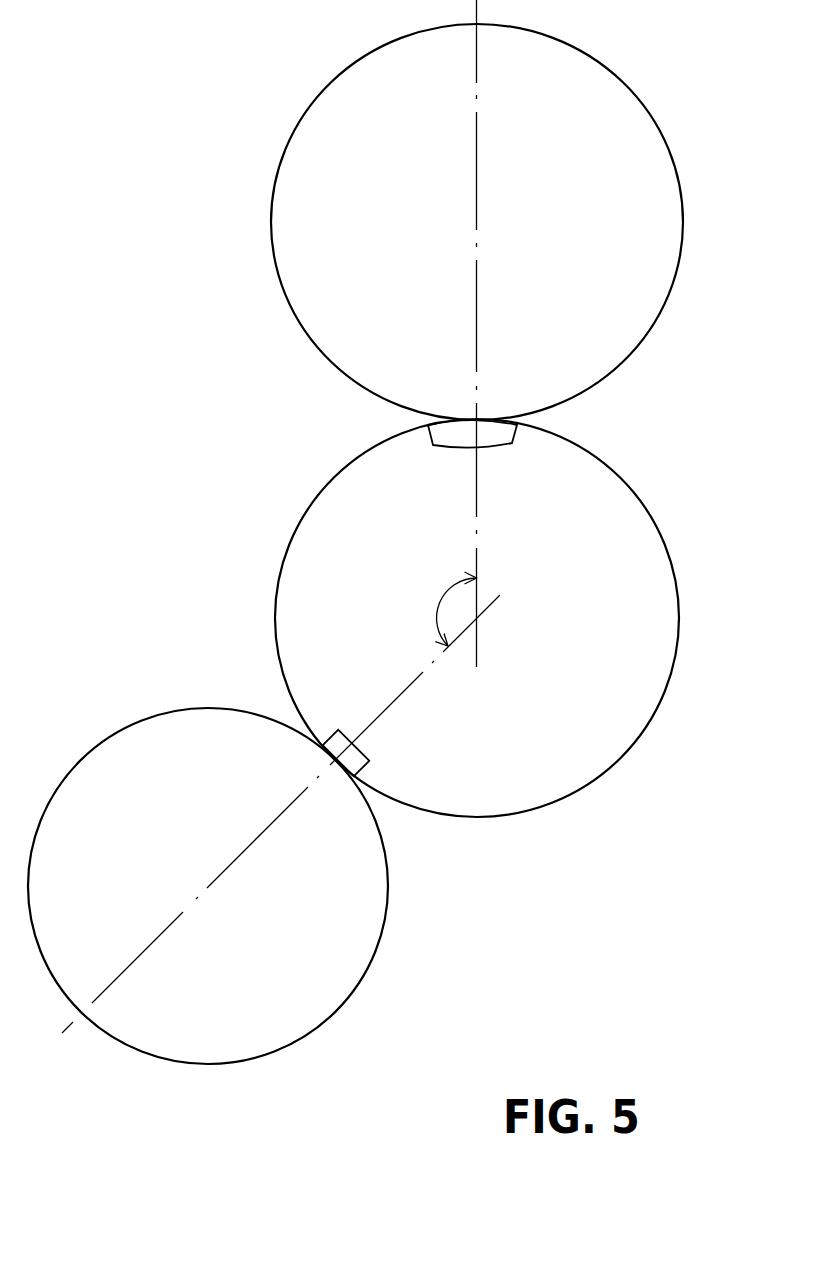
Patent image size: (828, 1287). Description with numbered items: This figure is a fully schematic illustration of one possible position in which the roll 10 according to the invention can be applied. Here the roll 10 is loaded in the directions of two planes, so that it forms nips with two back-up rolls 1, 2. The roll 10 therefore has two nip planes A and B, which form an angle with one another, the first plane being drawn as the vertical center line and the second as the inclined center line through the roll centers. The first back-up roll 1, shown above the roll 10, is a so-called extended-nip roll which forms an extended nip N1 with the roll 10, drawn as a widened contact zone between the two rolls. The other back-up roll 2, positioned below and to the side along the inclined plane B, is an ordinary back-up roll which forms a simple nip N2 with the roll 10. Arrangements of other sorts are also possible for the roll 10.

The first back-up roll 1 is at (678, 158).
The roll 10 is at (663, 510).
The second back-up roll 2 is at (400, 928).
The first nip plane A is at (476, 498).
The second nip plane B is at (412, 684).
The extended nip N1 is at (396, 422).
The nip N2 is at (292, 718).